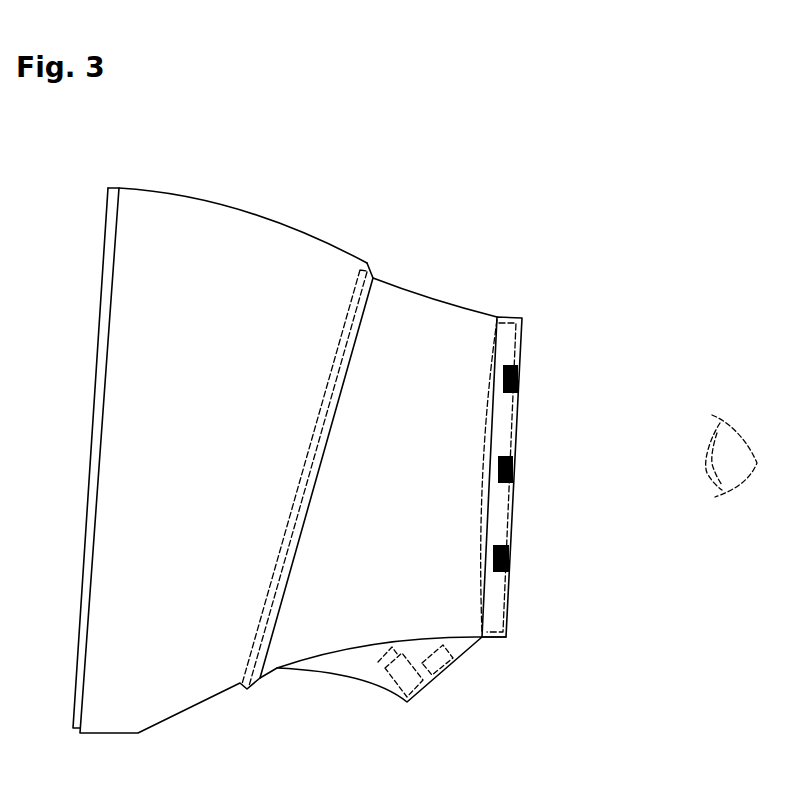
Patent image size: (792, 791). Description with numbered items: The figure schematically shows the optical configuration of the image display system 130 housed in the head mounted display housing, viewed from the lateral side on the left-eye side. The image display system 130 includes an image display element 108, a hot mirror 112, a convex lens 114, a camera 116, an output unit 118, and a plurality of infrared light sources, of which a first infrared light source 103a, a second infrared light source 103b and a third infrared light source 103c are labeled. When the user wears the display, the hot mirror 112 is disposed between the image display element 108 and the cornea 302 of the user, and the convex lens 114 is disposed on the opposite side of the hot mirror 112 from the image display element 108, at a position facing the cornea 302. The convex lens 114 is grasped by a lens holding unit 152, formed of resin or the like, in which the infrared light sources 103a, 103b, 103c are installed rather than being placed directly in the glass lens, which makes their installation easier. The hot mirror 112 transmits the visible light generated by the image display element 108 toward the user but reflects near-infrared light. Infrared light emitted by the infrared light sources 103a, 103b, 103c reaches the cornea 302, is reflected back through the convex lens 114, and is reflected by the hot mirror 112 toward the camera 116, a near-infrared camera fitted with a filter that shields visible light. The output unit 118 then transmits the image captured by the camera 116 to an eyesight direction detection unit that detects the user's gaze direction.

The image display element 108 is at (113, 188).
The image display system 130 is at (261, 215).
The hot mirror 112 is at (366, 262).
The convex lens 114 is at (510, 316).
The first infrared light source 103a is at (518, 379).
The second infrared light source 103b is at (513, 469).
The third infrared light source 103c is at (509, 559).
The lens holding unit 152 is at (500, 638).
The camera 116 is at (417, 693).
The output unit 118 is at (448, 667).
The cornea 302 is at (707, 478).